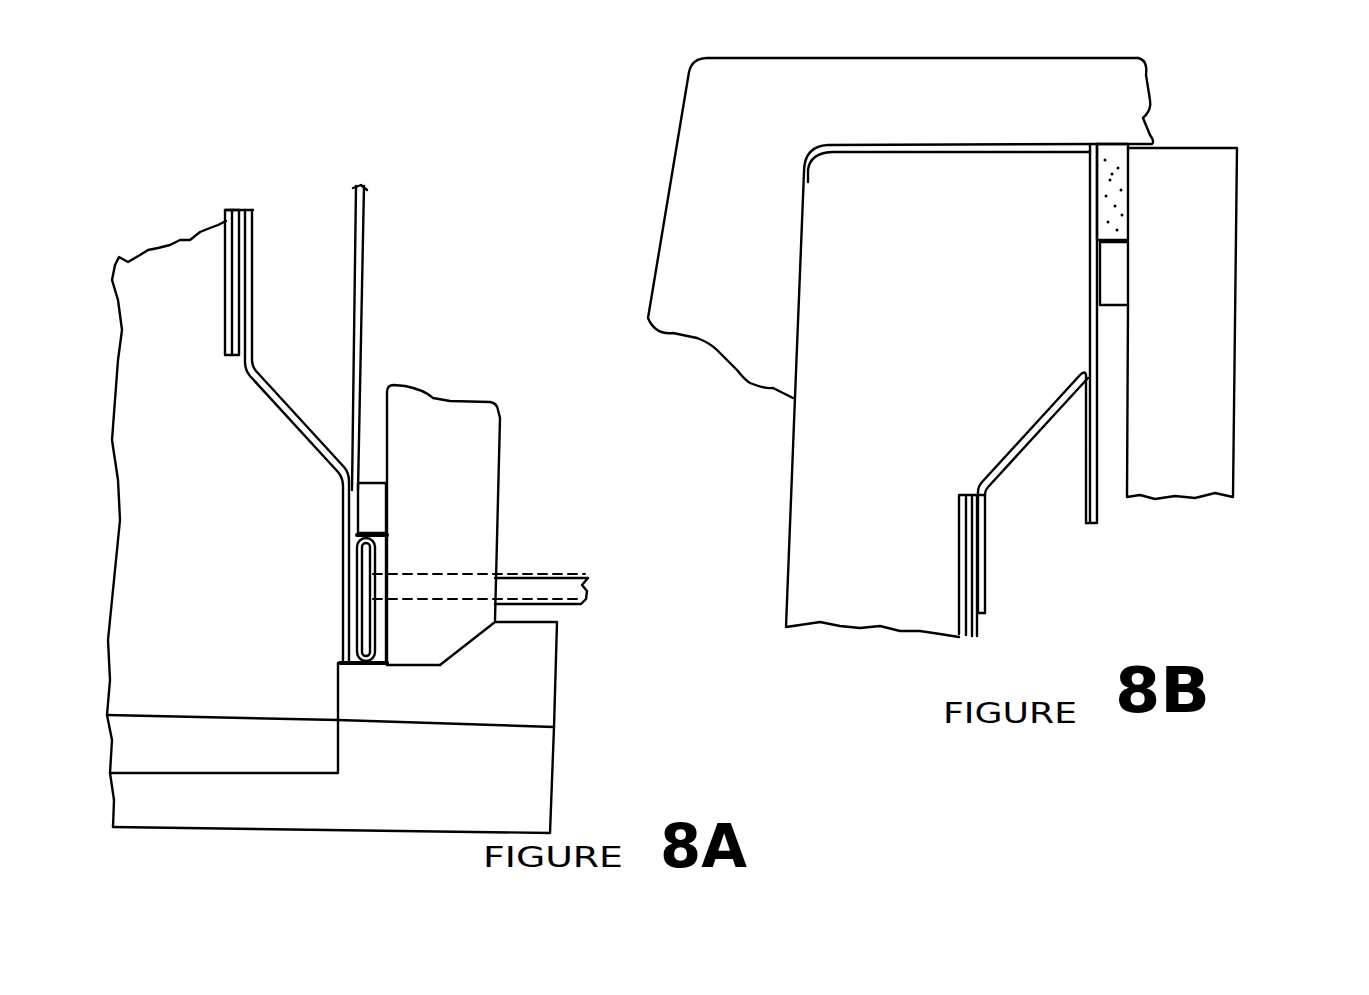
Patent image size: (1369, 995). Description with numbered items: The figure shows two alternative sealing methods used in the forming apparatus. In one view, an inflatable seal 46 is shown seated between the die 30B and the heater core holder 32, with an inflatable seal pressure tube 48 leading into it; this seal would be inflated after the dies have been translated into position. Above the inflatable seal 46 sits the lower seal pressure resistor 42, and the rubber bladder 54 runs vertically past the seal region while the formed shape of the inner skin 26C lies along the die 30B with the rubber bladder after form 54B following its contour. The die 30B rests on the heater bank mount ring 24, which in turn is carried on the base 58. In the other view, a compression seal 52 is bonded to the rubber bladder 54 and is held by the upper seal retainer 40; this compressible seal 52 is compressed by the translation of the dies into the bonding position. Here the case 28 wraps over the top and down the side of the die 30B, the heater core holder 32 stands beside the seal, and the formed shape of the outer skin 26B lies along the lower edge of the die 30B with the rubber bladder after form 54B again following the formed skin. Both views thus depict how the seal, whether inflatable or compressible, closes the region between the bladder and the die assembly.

In FIG. 8A, the heater bank mount ring 24 is at (558, 645).
In FIG. 8B, the formed shape of outer skin 26B is at (973, 618).
In FIG. 8A, the formed shape of inner skin 26C is at (245, 237).
In FIG. 8B, the case 28 is at (675, 157).
In FIG. 8A, the die similar to 30 30B is at (216, 222).
In FIG. 8B, the die similar to 30 30B is at (923, 632).
In FIG. 8A, the heater core holder 32 is at (502, 430).
In FIG. 8B, the heater core holder 32 is at (1233, 348).
In FIG. 8B, the upper seal retainer (alternate) 40 is at (1114, 262).
In FIG. 8A, the lower seal pressure resistor (alternate) 42 is at (374, 523).
In FIG. 8A, the inflatable seal (alternate) 46 is at (363, 567).
In FIG. 8A, the inflatable seal pressure tube (alternate) 48 is at (510, 576).
In FIG. 8B, the compression seal (alternate) 52 is at (1107, 160).
In FIG. 8A, the rubber bladder 54 is at (367, 311).
In FIG. 8B, the rubber bladder 54 is at (1097, 523).
In FIG. 8A, the rubber bladder—after form 54B is at (252, 278).
In FIG. 8B, the rubber bladder—after form 54B is at (985, 563).
In FIG. 8A, the base 58 is at (555, 773).